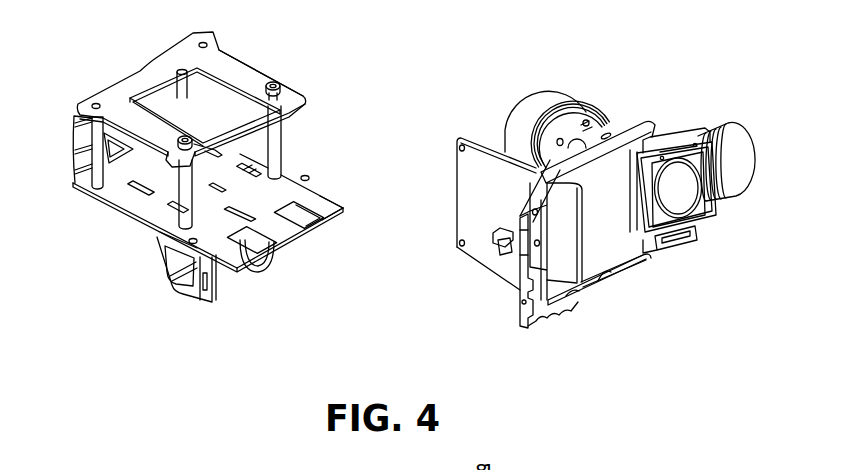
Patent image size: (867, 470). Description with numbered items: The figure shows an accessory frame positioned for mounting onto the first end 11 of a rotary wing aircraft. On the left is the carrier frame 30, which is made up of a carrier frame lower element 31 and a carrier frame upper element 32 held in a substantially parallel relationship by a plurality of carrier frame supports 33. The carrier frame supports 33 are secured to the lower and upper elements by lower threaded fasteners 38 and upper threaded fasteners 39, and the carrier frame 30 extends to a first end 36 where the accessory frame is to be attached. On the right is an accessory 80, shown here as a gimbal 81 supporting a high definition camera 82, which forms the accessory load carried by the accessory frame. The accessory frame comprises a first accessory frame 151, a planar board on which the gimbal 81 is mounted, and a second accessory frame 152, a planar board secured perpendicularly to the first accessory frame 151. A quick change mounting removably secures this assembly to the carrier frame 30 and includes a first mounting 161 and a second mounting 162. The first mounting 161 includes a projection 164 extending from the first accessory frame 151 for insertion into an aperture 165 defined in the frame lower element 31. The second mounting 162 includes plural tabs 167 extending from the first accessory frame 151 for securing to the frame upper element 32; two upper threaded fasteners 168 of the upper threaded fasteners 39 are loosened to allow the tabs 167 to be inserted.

The first end 11 is at (213, 258).
The carrier frame 30 is at (163, 54).
The carrier frame lower element 31 is at (117, 212).
The carrier frame upper element 32 is at (238, 62).
The carrier frame supports 33 is at (95, 152).
The first end 36 is at (347, 210).
The lower threaded fasteners 38 is at (92, 197).
The upper threaded fasteners 39 is at (94, 103).
The accessory 80 is at (666, 281).
The gimbal 81 is at (588, 120).
The high definition camera 82 is at (680, 198).
The first accessory frame 151 is at (520, 277).
The second accessory frame 152 is at (458, 170).
The first mounting 161 is at (578, 306).
The second mounting 162 is at (493, 233).
The projection 164 is at (564, 316).
The aperture 165 is at (242, 215).
The tabs 167 is at (500, 247).
The upper threaded fasteners 168 is at (303, 89).